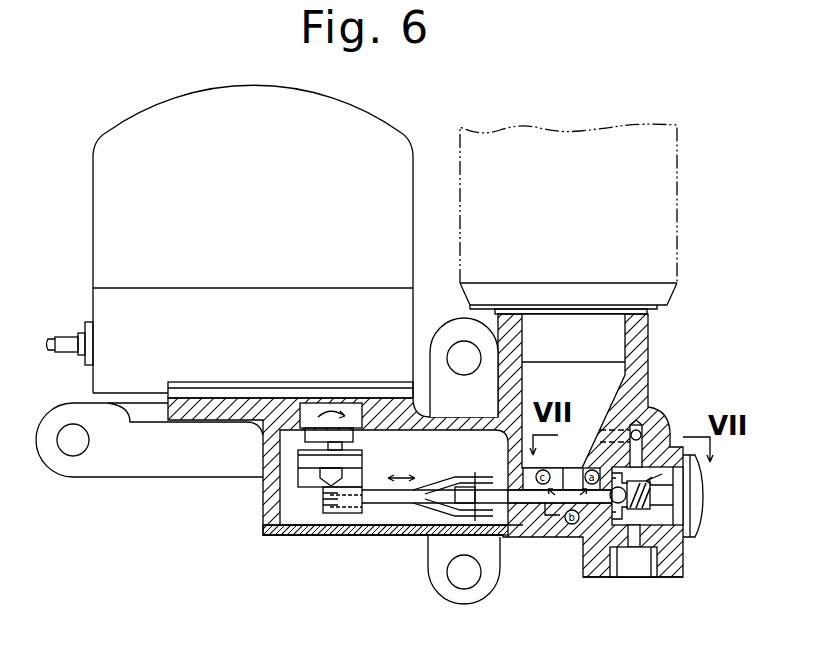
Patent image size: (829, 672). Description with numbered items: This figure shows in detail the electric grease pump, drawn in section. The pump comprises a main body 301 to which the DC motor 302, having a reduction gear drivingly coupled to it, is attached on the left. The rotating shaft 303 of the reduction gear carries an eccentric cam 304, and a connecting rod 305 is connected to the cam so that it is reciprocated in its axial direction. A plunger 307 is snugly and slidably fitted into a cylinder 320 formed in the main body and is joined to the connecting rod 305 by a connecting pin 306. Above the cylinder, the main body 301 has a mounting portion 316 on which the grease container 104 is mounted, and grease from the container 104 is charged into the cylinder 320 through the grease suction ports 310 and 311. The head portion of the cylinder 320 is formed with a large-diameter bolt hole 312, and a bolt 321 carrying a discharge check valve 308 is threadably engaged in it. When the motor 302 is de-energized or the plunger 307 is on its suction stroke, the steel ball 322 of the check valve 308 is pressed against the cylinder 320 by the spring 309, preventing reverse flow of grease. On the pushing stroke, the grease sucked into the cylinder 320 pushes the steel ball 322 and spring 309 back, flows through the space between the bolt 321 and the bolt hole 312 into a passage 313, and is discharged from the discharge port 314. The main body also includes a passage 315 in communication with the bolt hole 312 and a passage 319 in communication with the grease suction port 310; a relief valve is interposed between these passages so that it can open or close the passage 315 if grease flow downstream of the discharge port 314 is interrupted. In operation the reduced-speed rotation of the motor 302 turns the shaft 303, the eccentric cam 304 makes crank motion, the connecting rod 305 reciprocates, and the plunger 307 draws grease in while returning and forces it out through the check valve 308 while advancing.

The DC motor 302 is at (127, 137).
The grease container 104 is at (617, 128).
The mounting portion 316 is at (623, 337).
The main body 301 is at (650, 338).
The grease suction port 310 is at (590, 386).
The passage 319 is at (657, 380).
The passage 315 is at (638, 447).
The discharge check valve 308 is at (705, 478).
The spring 309 is at (653, 495).
The bolt 321 is at (697, 528).
The passage 313 is at (640, 537).
The discharge port 314 is at (683, 572).
The bolt hole 312 is at (632, 537).
The steel ball 322 is at (613, 527).
The cylinder 320 is at (603, 505).
The grease suction port 311 is at (575, 503).
The plunger 307 is at (533, 497).
The rotating shaft 303 is at (307, 442).
The eccentric cam 304 is at (297, 530).
The connecting rod 305 is at (378, 505).
The connecting pin 306 is at (432, 505).